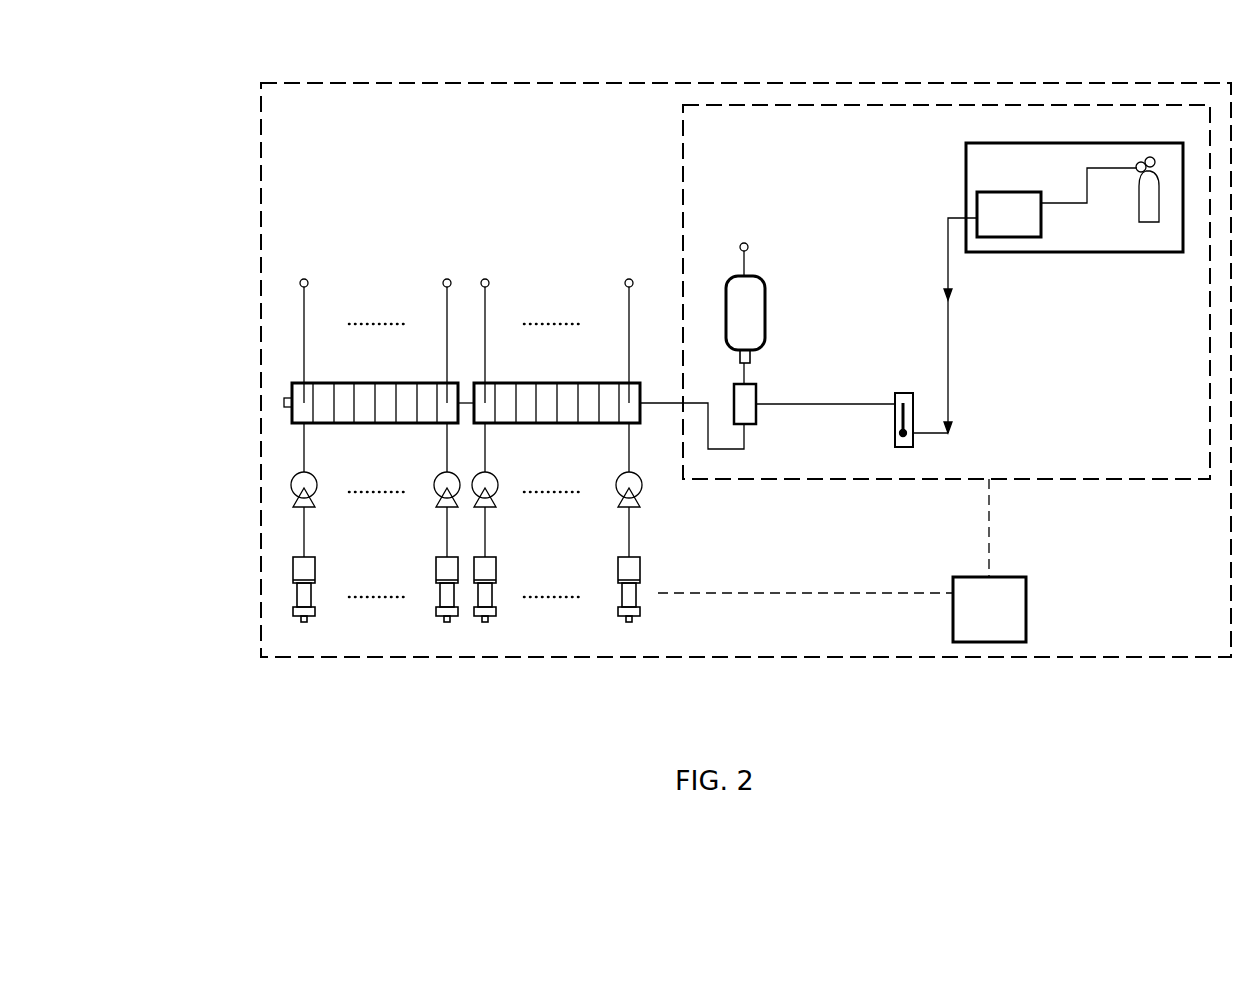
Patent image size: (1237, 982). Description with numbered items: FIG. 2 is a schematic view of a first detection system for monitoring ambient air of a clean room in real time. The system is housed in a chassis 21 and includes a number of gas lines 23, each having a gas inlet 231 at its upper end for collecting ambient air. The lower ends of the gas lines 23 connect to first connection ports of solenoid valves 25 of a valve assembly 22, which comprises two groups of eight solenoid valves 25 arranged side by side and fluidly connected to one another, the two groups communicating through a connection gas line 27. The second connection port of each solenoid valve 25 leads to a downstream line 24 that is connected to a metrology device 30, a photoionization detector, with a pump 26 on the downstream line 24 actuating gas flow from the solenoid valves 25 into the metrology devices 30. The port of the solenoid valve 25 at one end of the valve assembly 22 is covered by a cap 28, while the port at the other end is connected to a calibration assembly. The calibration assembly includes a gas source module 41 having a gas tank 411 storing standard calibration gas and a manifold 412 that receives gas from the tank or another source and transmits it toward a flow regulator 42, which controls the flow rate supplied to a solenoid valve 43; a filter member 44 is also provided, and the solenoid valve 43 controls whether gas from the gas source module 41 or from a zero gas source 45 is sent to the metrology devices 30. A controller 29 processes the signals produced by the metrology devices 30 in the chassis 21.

The chassis 21 is at (261, 568).
The valve assembly 22 is at (404, 353).
The gas line 23 is at (303, 311).
The gas inlet 231 is at (300, 283).
The downstream line 24 is at (304, 530).
The solenoid valve 25 is at (327, 393).
The pump 26 is at (291, 490).
The connection gas line 27 is at (466, 403).
The cap 28 is at (284, 403).
The controller 29 is at (1007, 623).
The metrology device 30 is at (293, 612).
The gas source module 41 is at (1014, 177).
The gas tank 411 is at (1148, 222).
The manifold 412 is at (1034, 232).
The flow regulator 42 is at (905, 447).
The solenoid valve 43 is at (754, 424).
The filter member 44 is at (752, 310).
The zero gas source 45 is at (750, 247).